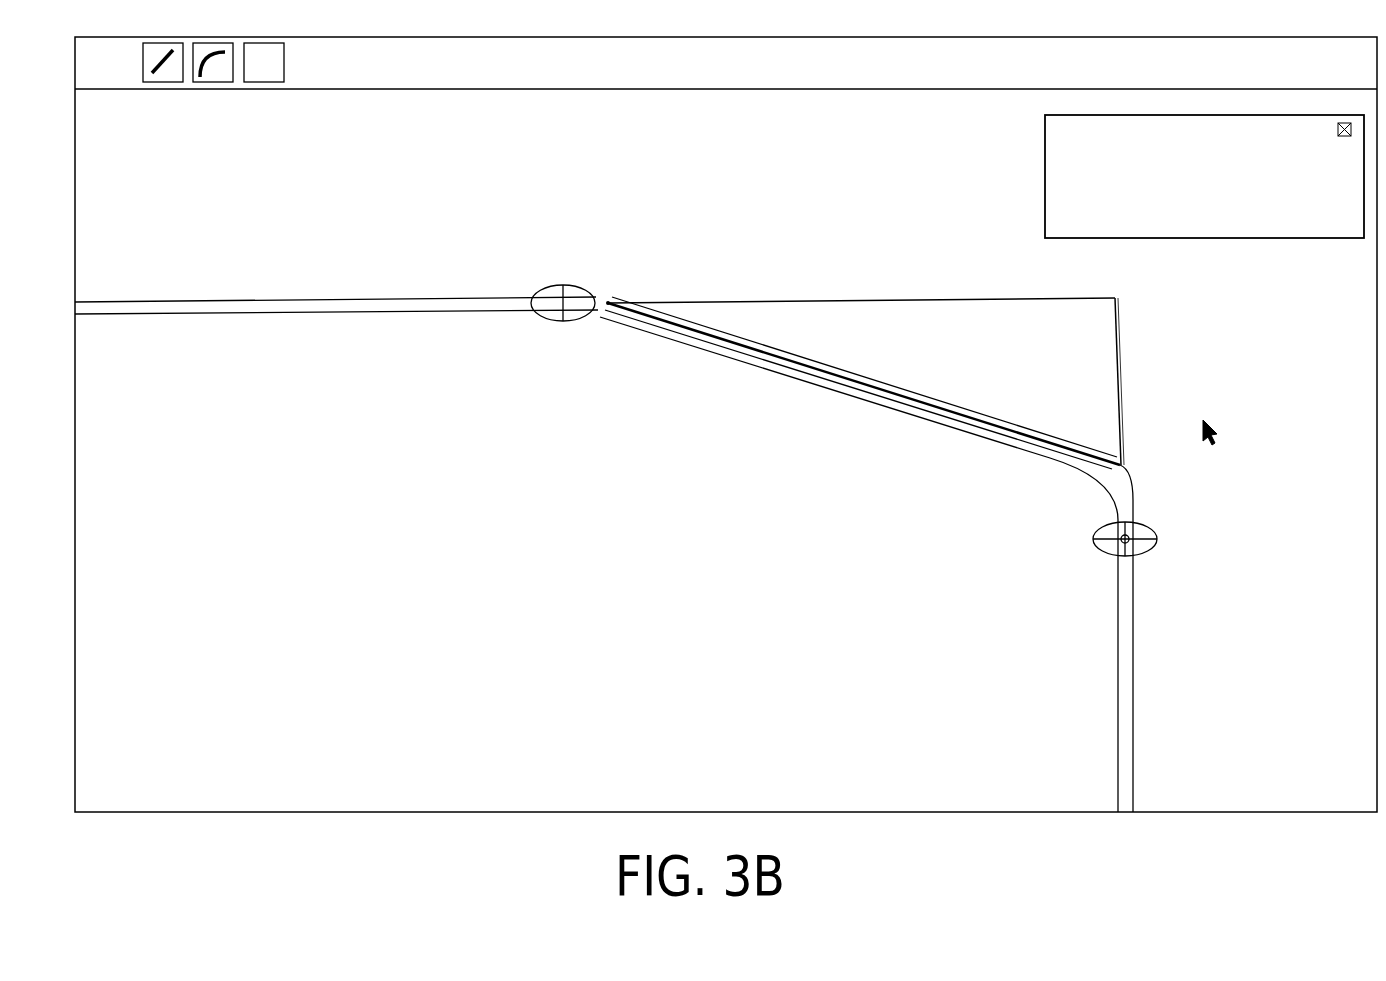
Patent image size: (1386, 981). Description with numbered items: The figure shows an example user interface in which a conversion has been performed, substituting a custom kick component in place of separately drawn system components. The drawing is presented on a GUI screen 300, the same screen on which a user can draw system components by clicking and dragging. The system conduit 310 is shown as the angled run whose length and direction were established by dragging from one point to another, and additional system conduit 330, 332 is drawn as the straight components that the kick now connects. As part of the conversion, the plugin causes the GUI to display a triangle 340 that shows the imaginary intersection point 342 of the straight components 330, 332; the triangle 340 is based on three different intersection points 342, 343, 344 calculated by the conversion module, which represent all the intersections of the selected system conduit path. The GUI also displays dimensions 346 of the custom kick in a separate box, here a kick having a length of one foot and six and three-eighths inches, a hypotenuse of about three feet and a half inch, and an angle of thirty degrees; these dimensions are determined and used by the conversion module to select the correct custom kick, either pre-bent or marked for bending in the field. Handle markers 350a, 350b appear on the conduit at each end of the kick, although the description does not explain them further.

The GUI screen 300 is at (500, 472).
The system conduit 310 is at (887, 398).
The additional system conduit 330 is at (248, 312).
The additional system conduit 332 is at (1127, 676).
The triangle 340 is at (1102, 356).
The intersection point 342 is at (1115, 297).
The intersection point 343 is at (1122, 465).
The intersection point 344 is at (608, 300).
The dimensions 346 is at (1045, 178).
The first handle 350a is at (573, 317).
The second handle 350b is at (1115, 543).